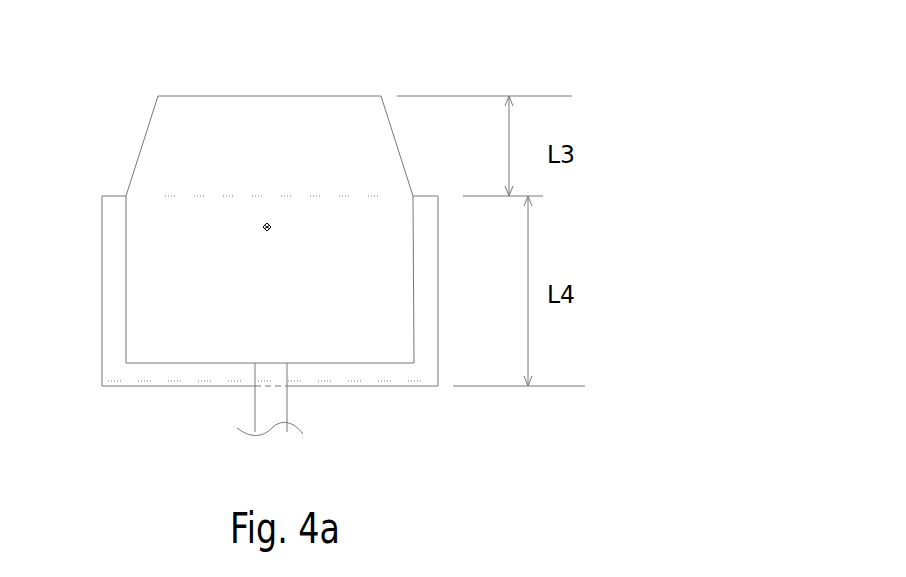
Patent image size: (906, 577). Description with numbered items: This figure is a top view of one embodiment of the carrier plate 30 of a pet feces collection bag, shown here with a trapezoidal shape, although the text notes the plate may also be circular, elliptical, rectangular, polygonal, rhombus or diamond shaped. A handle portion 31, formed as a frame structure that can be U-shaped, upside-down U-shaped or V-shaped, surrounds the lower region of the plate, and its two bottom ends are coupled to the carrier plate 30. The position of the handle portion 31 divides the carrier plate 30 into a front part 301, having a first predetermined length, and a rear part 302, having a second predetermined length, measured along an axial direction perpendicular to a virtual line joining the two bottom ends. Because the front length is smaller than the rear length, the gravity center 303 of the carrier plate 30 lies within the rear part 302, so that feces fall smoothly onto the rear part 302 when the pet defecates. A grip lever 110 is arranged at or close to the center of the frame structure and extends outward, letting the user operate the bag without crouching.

The carrier plate 30 is at (302, 82).
The front part 301 is at (277, 169).
The rear part 302 is at (272, 294).
The gravity center 303 is at (265, 225).
The handle portion 31 is at (116, 275).
The grip lever 110 is at (262, 398).